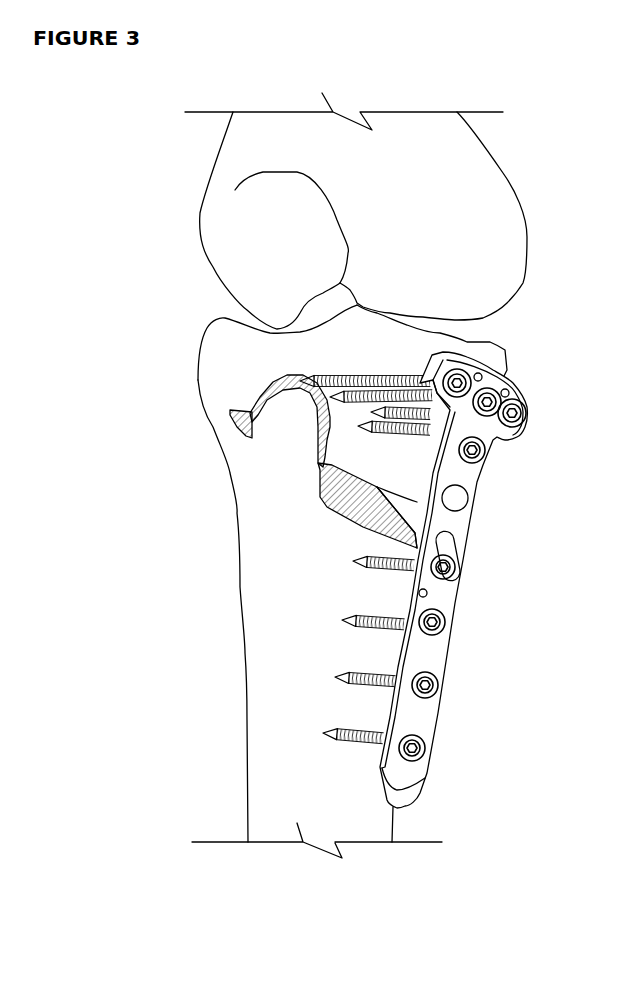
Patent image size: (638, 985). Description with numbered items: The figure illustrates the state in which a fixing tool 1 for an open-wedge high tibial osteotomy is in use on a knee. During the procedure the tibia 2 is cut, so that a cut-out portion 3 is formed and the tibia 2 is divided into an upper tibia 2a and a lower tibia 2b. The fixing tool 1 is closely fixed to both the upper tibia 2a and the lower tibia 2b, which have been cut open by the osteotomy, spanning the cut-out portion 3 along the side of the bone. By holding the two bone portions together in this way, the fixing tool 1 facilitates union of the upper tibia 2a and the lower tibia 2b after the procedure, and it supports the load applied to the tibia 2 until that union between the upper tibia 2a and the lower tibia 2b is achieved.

The fixing tool for an open-wedge high tibial osteotomy 1 is at (497, 488).
The tibia 2 is at (90, 465).
The upper tibia 2a is at (352, 445).
The lower tibia 2b is at (330, 532).
The cut-out portion 3 is at (373, 525).